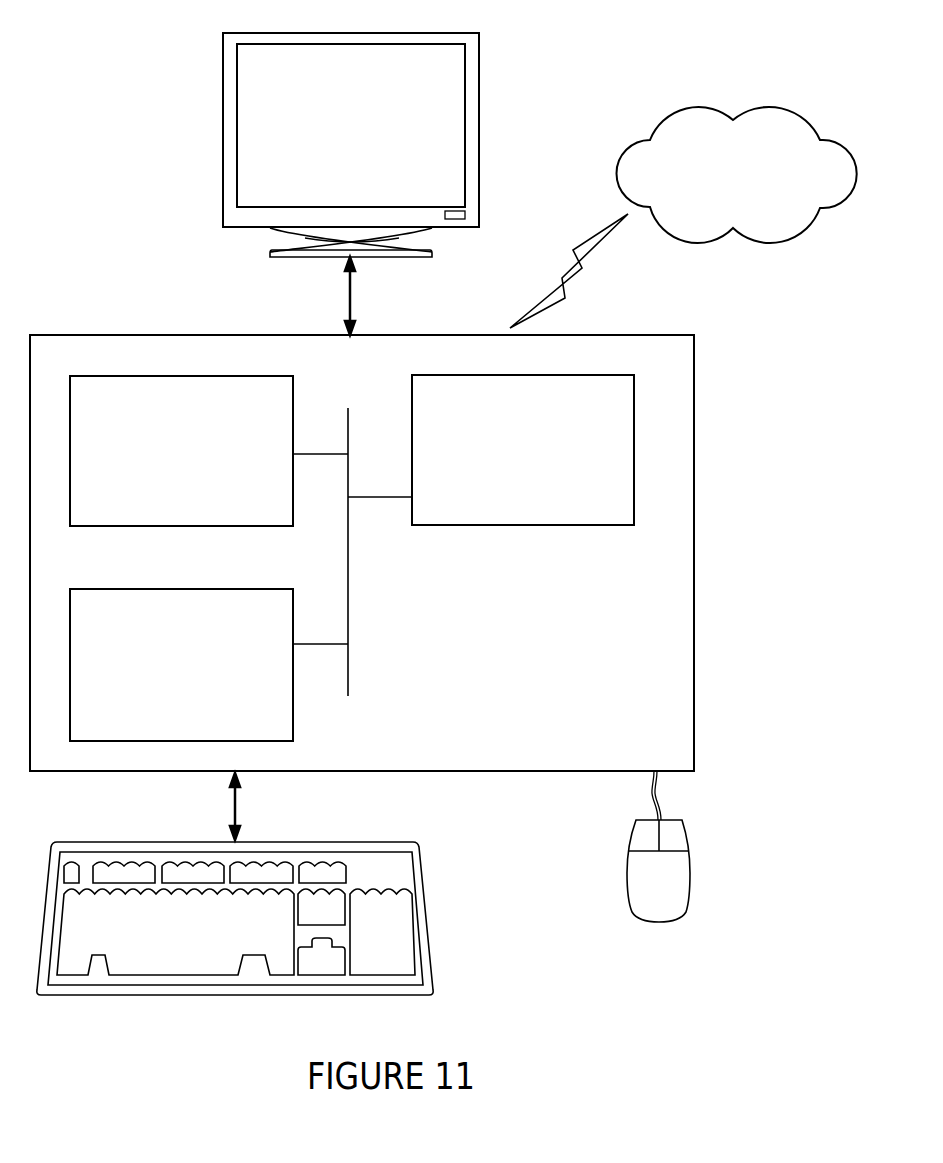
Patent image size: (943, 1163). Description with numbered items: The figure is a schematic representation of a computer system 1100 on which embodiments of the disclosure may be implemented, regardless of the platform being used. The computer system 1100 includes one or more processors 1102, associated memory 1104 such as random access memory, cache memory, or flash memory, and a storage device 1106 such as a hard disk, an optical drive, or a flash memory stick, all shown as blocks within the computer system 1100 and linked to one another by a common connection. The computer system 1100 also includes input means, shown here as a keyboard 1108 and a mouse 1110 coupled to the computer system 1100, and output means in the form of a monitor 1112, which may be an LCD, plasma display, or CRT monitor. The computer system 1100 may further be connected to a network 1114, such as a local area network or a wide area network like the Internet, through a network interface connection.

The computer system 1100 is at (752, 340).
The processor 1102 is at (559, 456).
The memory 1104 is at (202, 457).
The storage device 1106 is at (196, 677).
The keyboard 1108 is at (190, 946).
The mouse 1110 is at (680, 892).
The monitor 1112 is at (373, 141).
The network 1114 is at (759, 189).